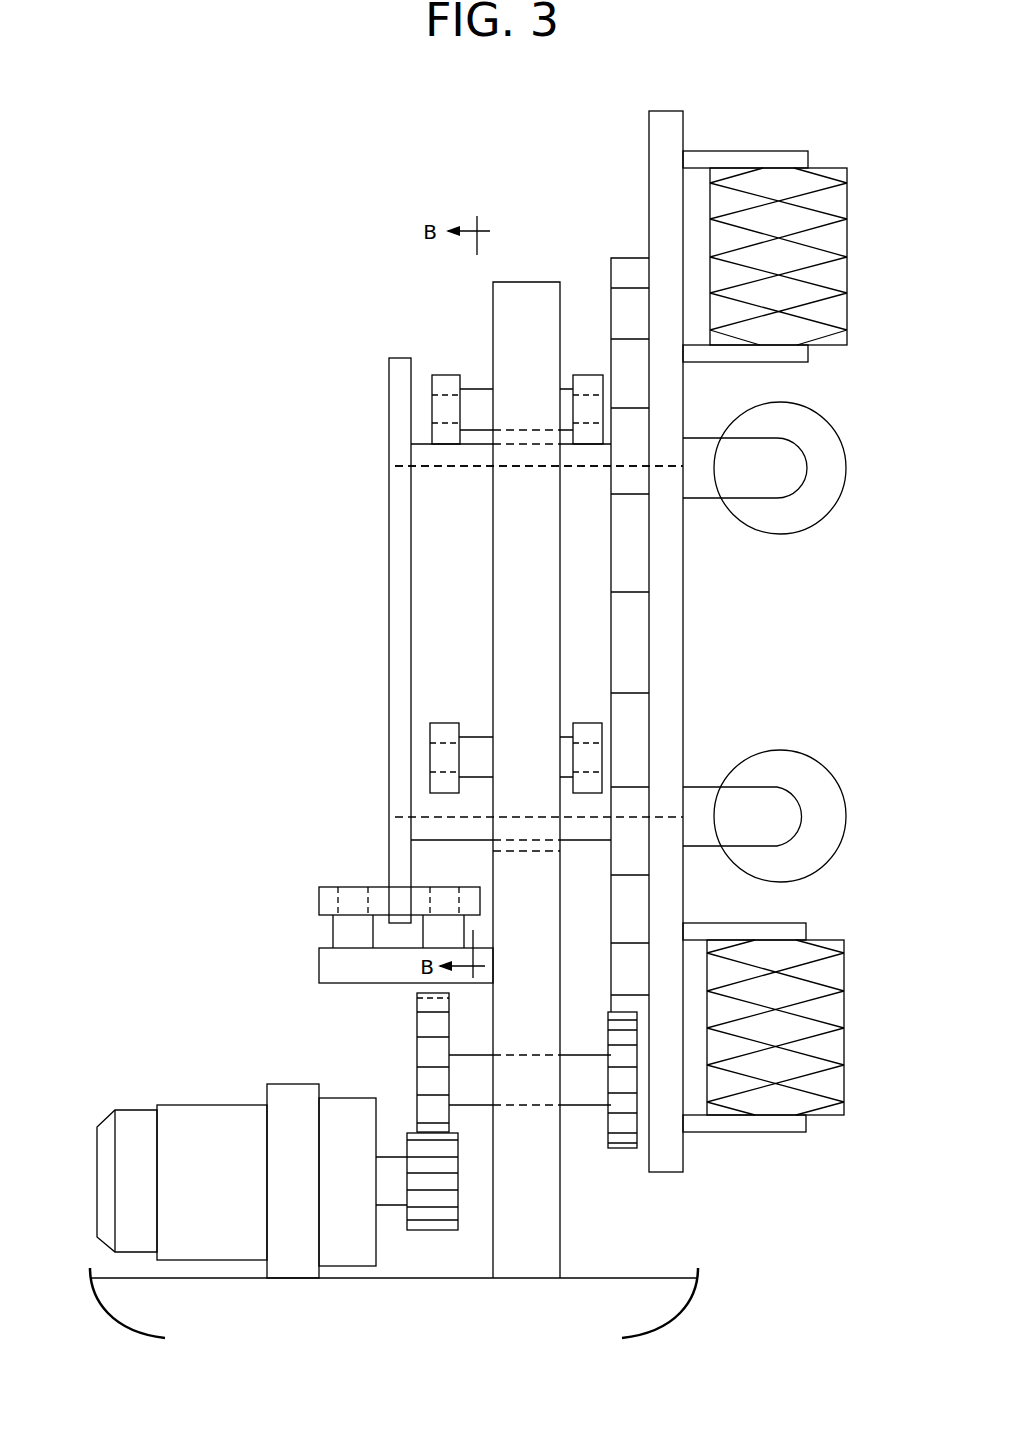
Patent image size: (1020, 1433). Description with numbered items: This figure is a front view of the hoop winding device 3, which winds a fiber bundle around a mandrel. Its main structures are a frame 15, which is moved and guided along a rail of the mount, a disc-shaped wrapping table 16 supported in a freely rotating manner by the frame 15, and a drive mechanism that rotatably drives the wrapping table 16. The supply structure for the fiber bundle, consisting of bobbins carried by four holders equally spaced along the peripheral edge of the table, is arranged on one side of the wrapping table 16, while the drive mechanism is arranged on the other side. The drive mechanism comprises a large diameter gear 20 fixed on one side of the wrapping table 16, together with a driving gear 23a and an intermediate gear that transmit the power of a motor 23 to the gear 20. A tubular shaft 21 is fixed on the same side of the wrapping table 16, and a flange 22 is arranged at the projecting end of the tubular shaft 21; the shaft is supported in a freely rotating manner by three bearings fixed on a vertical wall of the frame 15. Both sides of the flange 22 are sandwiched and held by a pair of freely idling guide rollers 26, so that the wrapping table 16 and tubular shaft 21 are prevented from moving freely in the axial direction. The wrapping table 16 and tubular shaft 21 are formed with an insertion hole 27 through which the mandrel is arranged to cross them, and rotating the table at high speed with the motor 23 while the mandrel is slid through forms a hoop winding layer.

The hoop winding device 3 is at (505, 162).
The frame 15 is at (620, 1275).
The wrapping table 16 is at (657, 147).
The large diameter gear 20 is at (618, 557).
The tubular shaft 21 is at (420, 440).
The flange 22 is at (388, 843).
The motor 23 is at (190, 1103).
The driving gear 23a is at (431, 1200).
The guide roller 26 is at (438, 893).
The insertion hole 27 is at (432, 467).